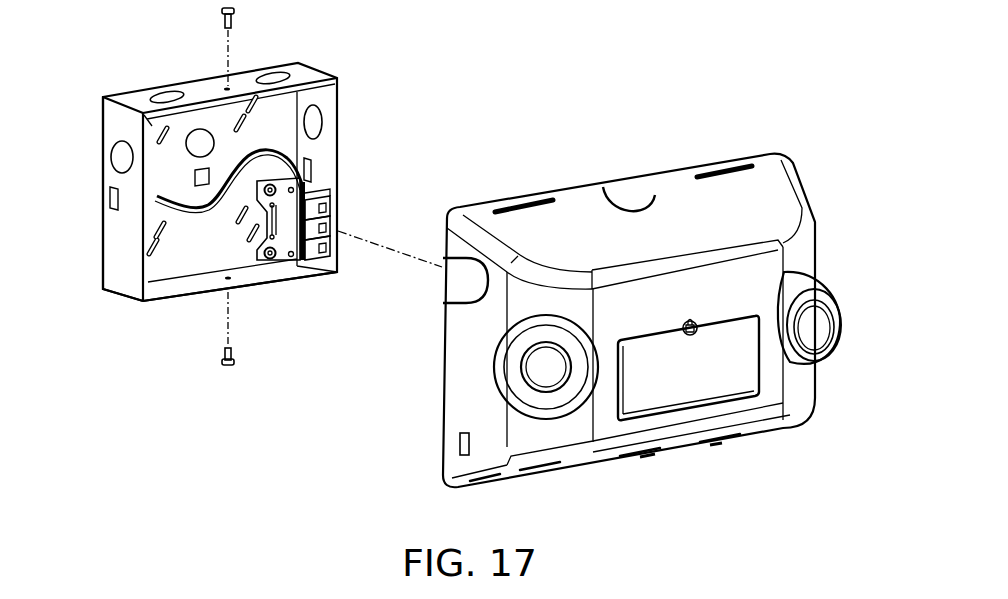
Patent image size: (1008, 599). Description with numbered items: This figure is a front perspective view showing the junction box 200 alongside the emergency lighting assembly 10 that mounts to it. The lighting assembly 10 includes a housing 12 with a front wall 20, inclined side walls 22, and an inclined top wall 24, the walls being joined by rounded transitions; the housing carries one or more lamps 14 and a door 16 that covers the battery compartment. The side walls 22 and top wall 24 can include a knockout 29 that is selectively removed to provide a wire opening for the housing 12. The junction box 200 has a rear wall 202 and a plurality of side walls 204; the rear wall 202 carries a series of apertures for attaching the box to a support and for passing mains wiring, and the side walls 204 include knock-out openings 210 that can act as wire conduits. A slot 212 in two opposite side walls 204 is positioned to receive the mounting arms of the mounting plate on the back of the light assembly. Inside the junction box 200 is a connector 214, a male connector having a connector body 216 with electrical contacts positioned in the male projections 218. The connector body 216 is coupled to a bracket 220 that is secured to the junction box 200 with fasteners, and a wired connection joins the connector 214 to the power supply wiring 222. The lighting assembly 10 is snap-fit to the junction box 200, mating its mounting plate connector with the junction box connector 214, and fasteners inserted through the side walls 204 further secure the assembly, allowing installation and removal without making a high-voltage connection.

The emergency lighting assembly 10 is at (812, 148).
The housing 12 is at (458, 482).
The lamp 14 is at (858, 320).
The door 16 is at (735, 388).
The front wall 20 is at (609, 425).
The side walls 22 is at (458, 383).
The top wall 24 is at (772, 197).
The knockout 29 is at (623, 190).
The junction box 200 is at (100, 86).
The rear wall 202 is at (162, 267).
The side walls 204 is at (107, 263).
The knock-out openings 210 is at (273, 72).
The slot 212 is at (108, 197).
The connector 214 is at (305, 265).
The connector body 216 is at (313, 188).
The male projections 218 is at (325, 212).
The bracket 220 is at (279, 258).
The power supply wiring 222 is at (285, 152).